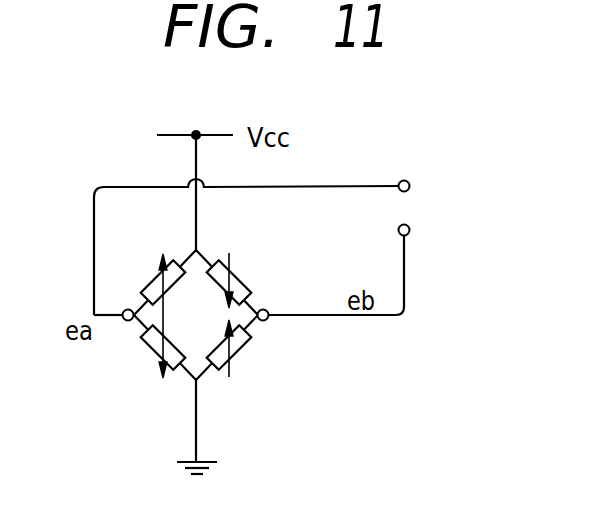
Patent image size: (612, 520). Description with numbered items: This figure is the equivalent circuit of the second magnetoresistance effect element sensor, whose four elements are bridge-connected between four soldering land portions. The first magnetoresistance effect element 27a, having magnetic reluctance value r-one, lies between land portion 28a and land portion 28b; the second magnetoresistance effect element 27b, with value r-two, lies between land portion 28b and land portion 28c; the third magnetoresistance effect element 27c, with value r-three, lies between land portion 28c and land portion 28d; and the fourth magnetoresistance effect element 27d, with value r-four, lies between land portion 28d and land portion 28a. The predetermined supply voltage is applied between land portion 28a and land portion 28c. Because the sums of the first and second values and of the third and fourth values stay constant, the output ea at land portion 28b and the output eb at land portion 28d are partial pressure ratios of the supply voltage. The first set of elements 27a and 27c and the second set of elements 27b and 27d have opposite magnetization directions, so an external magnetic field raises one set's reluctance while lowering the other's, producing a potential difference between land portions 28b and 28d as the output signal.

The first magnetoresistance effect element 27a is at (158, 264).
The second magnetoresistance effect element 27b is at (148, 355).
The third magnetoresistance effect element 27c is at (242, 360).
The fourth magnetoresistance effect element 27d is at (240, 263).
The land portion 28a is at (199, 214).
The land portion 28b is at (411, 184).
The land portion 28c is at (199, 428).
The land portion 28d is at (411, 229).